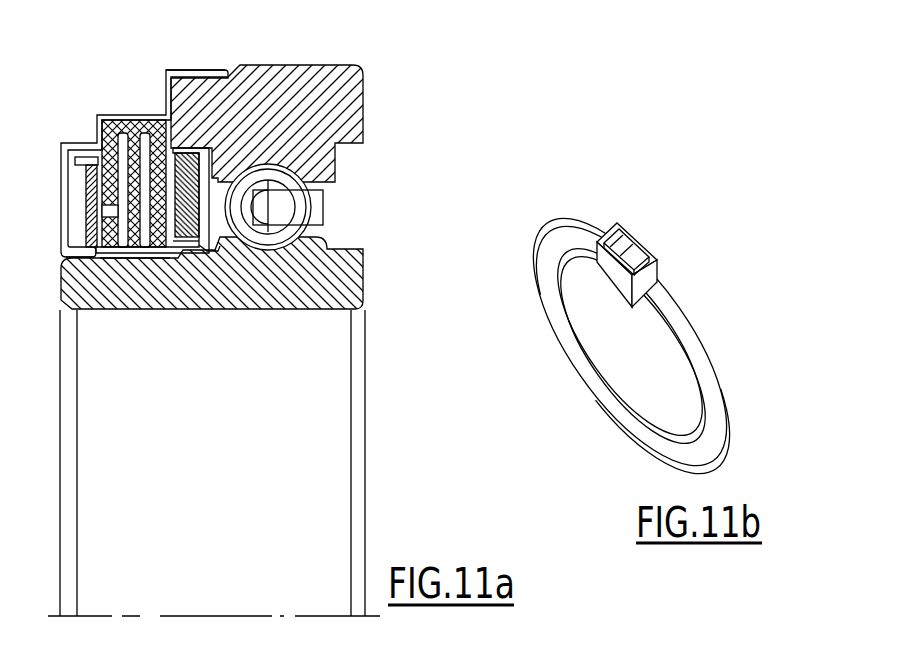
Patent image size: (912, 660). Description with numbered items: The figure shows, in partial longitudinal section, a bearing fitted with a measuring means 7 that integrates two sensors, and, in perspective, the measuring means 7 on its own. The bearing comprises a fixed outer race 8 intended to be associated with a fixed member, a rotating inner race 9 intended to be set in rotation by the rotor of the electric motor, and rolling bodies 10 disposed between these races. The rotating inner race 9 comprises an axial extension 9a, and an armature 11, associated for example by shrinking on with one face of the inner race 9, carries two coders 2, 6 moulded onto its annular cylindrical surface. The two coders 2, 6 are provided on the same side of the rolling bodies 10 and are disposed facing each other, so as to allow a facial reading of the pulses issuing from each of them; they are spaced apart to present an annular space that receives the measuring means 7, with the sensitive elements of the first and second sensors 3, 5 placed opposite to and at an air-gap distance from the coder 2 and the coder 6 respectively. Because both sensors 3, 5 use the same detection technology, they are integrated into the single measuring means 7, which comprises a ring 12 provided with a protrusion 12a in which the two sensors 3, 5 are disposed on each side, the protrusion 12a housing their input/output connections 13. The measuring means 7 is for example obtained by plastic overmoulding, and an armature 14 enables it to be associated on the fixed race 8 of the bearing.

In FIG. 11A, the coder 2 is at (195, 235).
In FIG. 11A, the first sensor 3 is at (143, 117).
In FIG. 11A, the second sensor 5 is at (122, 232).
In FIG. 11A, the coder 6 is at (88, 157).
In FIG. 11A, the measuring means 7 is at (107, 117).
In FIG. 11B, the measuring means 7 is at (646, 340).
In FIG. 11A, the fixed outer race 8 is at (347, 102).
In FIG. 11A, the rotating inner race 9 is at (350, 273).
In FIG. 11A, the axial extension 9a is at (147, 290).
In FIG. 11A, the rolling bodies 10 is at (237, 207).
In FIG. 11A, the armature 11 is at (67, 265).
In FIG. 11B, the ring 12 is at (707, 377).
In FIG. 11B, the protrusion 12a is at (596, 274).
In FIG. 11B, the input/output connections 13 is at (627, 253).
In FIG. 11A, the armature 14 is at (183, 68).